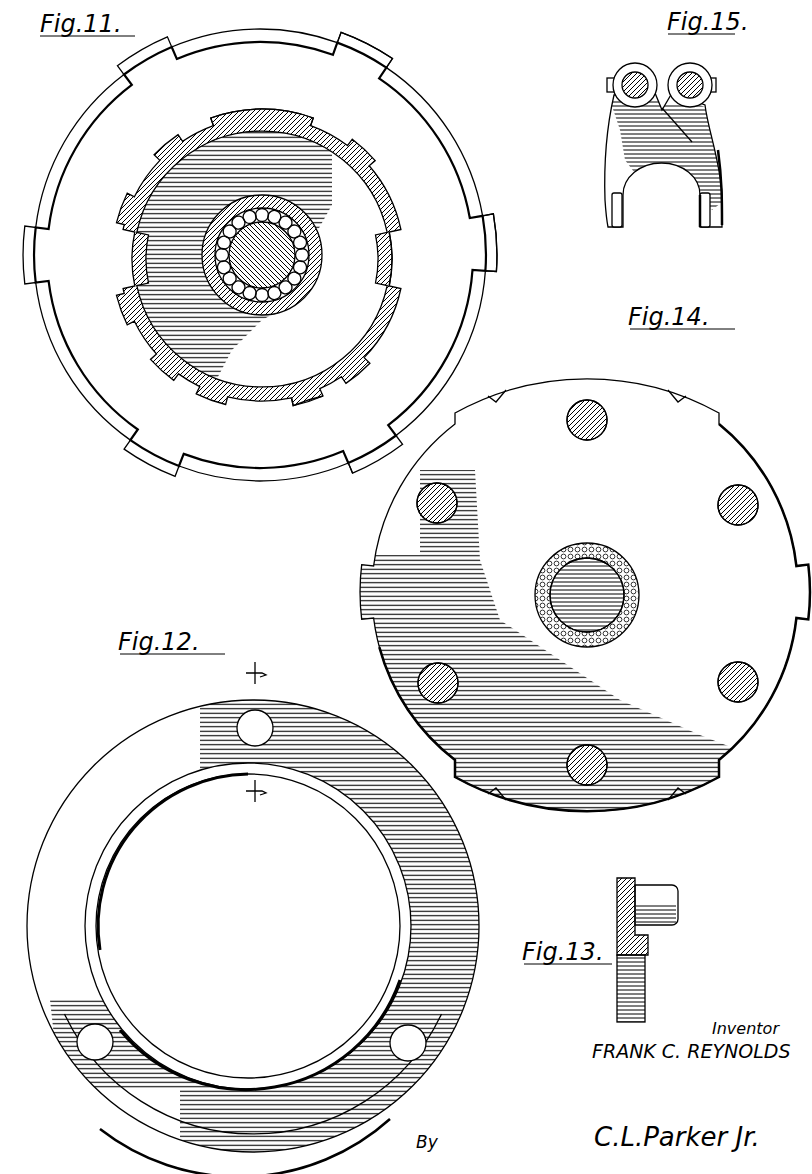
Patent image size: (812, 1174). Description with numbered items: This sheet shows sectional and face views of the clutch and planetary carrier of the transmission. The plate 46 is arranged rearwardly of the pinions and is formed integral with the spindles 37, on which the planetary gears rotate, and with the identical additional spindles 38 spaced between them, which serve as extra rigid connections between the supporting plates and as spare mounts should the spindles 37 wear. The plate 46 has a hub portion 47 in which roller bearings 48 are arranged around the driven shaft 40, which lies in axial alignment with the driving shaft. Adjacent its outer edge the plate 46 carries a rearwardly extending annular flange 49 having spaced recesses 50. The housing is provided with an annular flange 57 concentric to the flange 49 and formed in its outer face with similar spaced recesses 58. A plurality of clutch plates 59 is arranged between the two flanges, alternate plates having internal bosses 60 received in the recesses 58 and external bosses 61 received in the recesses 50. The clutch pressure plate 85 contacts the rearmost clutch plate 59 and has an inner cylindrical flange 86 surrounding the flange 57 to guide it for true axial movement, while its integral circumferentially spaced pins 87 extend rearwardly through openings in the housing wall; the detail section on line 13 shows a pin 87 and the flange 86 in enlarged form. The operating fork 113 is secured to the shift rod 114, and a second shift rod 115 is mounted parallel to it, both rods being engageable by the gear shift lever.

In FIG. 12, the section line indicator 13 is at (257, 731).
In FIG. 14, the spindle 37 is at (588, 436).
In FIG. 14, the additional spindle 38 is at (458, 500).
In FIG. 14, the driven shaft 40 is at (598, 574).
In FIG. 11, the plate 46 is at (237, 246).
In FIG. 14, the plate 46 is at (744, 722).
In FIG. 11, the hub portion 47 is at (322, 268).
In FIG. 11, the roller bearings 48 is at (277, 292).
In FIG. 11, the annular flange 49 is at (466, 163).
In FIG. 11, the recesses 50 is at (480, 246).
In FIG. 11, the annular flange 57 is at (386, 322).
In FIG. 11, the recesses 58 is at (396, 258).
In FIG. 11, the clutch plates 59 is at (252, 462).
In FIG. 11, the internal bosses 60 is at (322, 128).
In FIG. 11, the external bosses 61 is at (392, 50).
In FIG. 14, the external bosses 61 is at (490, 394).
In FIG. 12, the clutch pressure plate 85 is at (478, 888).
In FIG. 13, the clutch pressure plate 85 is at (617, 886).
In FIG. 12, the inner cylindrical flange 86 is at (376, 818).
In FIG. 13, the inner cylindrical flange 86 is at (650, 946).
In FIG. 12, the pins 87 is at (262, 716).
In FIG. 13, the pins 87 is at (660, 898).
In FIG. 15, the operating fork 113 is at (716, 146).
In FIG. 15, the shift rod 114 is at (690, 80).
In FIG. 15, the second shift rod 115 is at (633, 80).